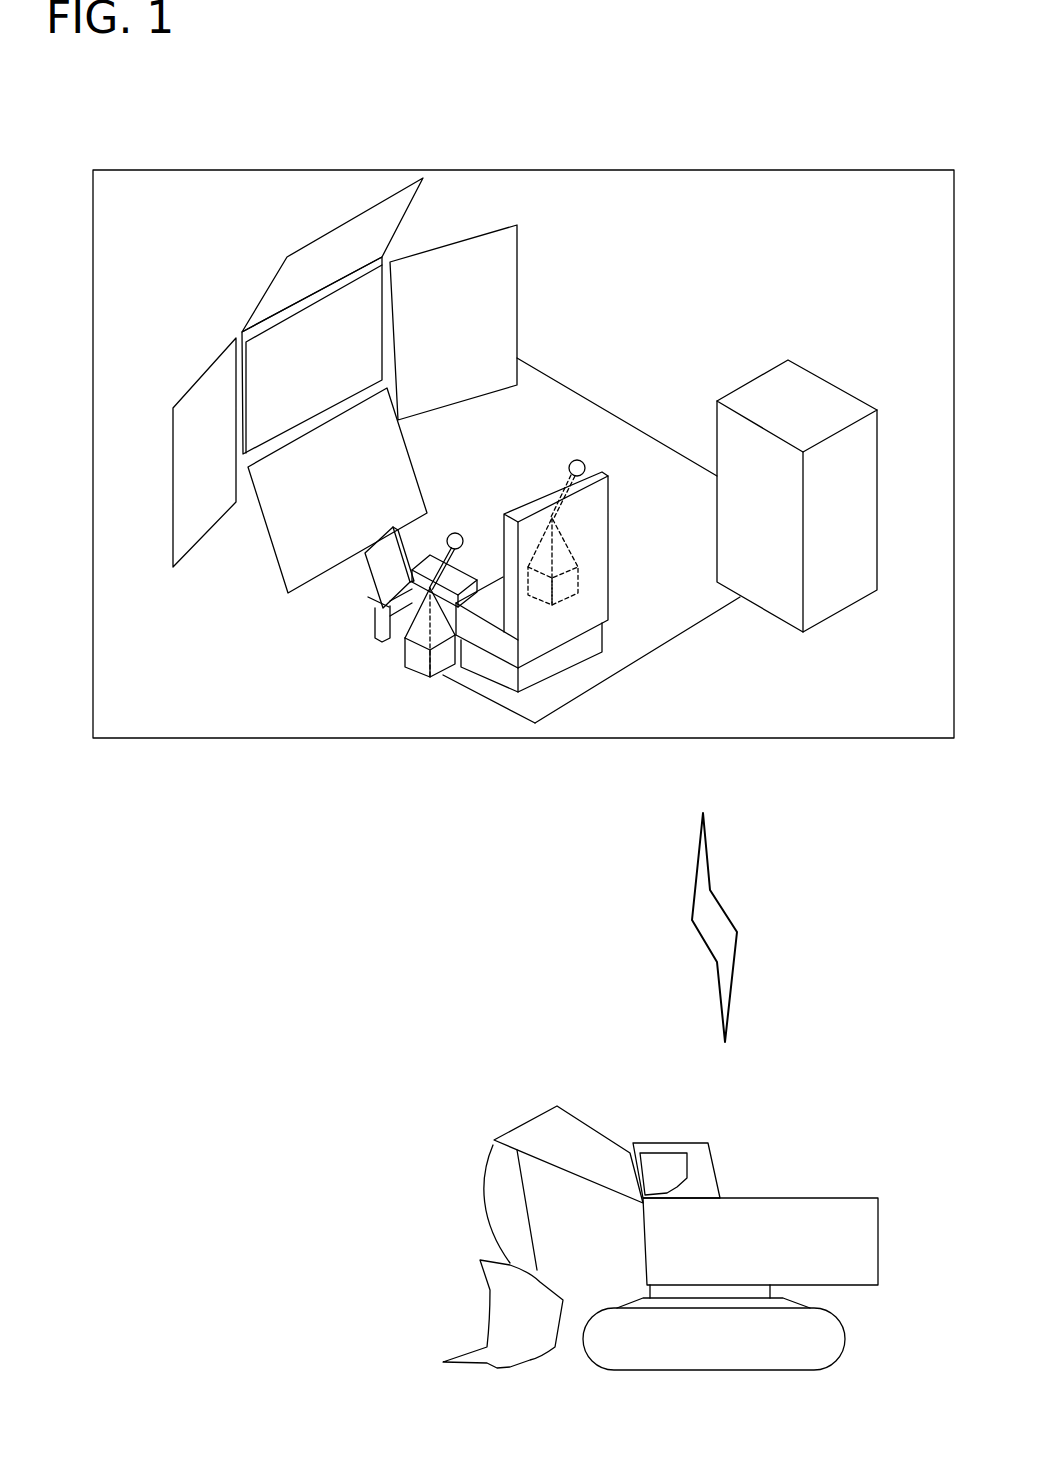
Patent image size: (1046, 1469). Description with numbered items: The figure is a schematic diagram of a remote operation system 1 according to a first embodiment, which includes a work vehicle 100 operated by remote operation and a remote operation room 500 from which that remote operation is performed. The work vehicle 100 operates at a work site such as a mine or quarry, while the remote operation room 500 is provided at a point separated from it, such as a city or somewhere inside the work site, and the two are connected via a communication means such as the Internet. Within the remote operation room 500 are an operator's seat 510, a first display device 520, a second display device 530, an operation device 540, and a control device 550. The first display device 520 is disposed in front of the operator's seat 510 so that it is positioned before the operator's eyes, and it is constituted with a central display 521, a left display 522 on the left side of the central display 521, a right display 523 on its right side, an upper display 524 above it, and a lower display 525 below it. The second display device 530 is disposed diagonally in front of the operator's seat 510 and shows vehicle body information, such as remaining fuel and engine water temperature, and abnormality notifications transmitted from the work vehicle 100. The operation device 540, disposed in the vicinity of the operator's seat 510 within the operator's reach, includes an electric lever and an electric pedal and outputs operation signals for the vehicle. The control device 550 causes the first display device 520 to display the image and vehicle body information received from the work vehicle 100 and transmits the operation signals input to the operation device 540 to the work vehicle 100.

The remote operation system 1 is at (919, 120).
The work vehicle 100 is at (827, 1198).
The remote operation room 500 is at (772, 170).
The operator's seat 510 is at (612, 553).
The first display device 520 is at (194, 264).
The central display 521 is at (252, 367).
The left display 522 is at (190, 471).
The right display 523 is at (508, 292).
The upper display 524 is at (308, 257).
The lower display 525 is at (285, 550).
The second display device 530 is at (364, 582).
The operation device 540 is at (408, 642).
The control device 550 is at (857, 522).